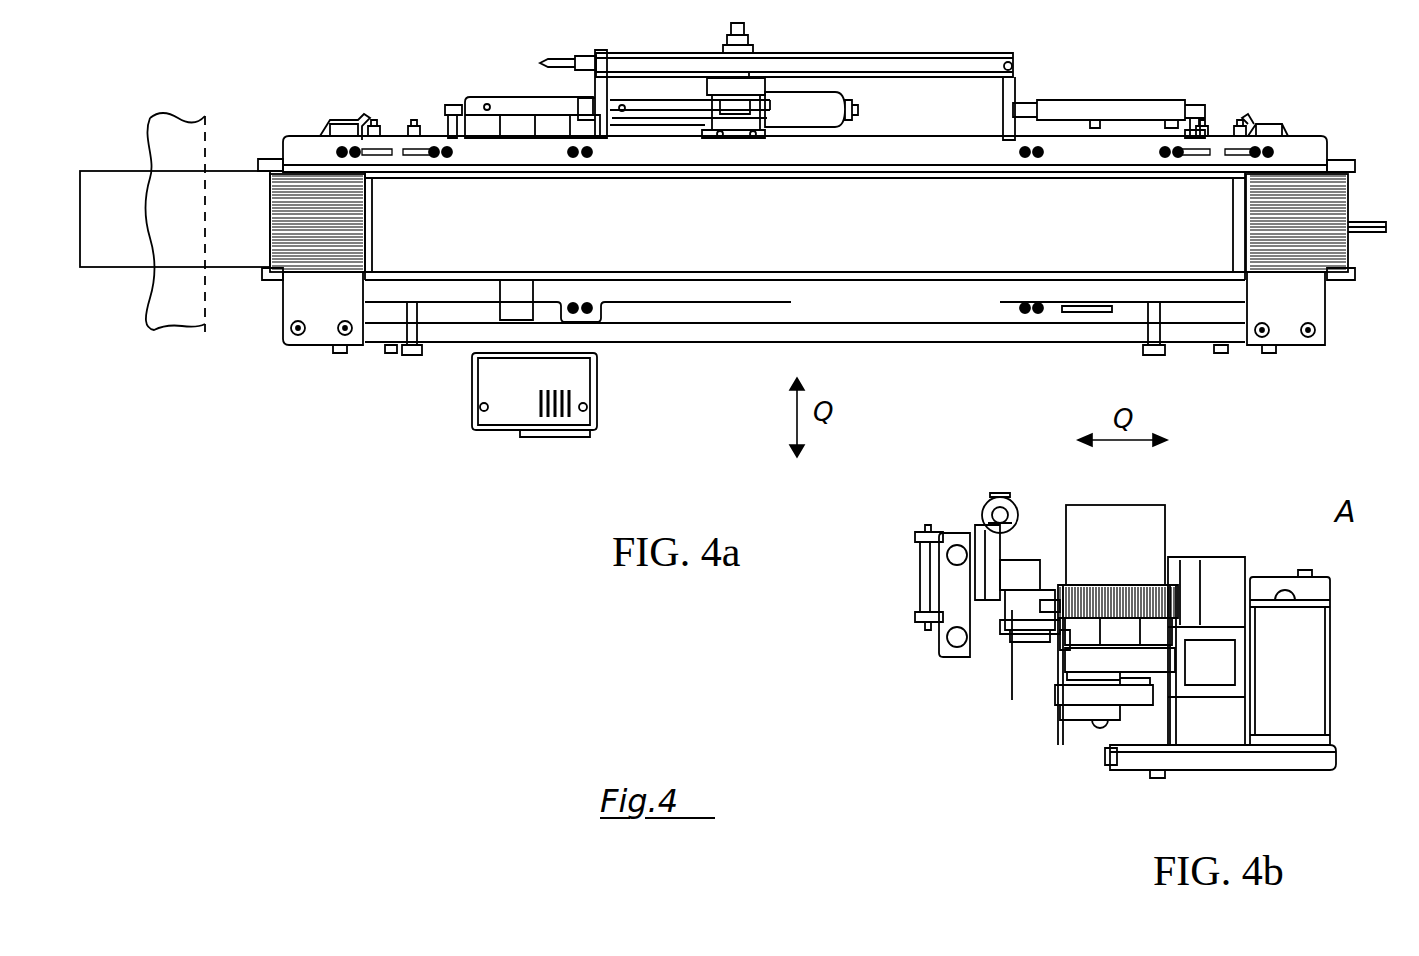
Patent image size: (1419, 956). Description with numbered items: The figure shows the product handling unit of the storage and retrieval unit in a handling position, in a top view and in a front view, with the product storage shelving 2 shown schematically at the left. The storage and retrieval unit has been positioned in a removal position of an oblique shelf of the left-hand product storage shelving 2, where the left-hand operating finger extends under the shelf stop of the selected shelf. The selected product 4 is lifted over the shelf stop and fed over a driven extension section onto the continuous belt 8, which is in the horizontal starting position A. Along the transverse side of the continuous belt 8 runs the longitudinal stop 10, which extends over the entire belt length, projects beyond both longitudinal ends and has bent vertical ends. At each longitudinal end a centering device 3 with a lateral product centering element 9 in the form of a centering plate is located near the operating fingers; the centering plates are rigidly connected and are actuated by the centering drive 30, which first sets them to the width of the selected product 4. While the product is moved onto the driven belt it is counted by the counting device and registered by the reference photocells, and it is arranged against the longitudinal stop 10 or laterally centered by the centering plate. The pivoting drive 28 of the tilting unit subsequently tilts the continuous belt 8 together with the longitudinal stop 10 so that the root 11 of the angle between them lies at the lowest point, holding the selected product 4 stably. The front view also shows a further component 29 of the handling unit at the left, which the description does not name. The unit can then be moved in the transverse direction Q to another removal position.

In FIG. 4A, the product storage shelving 2 is at (180, 128).
In FIG. 4A, the centering device 3 is at (255, 355).
In FIG. 4A, the selected product 4 is at (103, 187).
In FIG. 4B, the selected product 4 is at (1116, 561).
In FIG. 4A, the continuous belt 8 is at (801, 231).
In FIG. 4B, the lateral product centering element 9 is at (1187, 553).
In FIG. 4A, the longitudinal stop 10 is at (497, 173).
In FIG. 4B, the longitudinal stop 10 is at (1062, 557).
In FIG. 4B, the root of the angle 11 is at (1065, 622).
In FIG. 4A, the pivoting drive 28 is at (823, 102).
In FIG. 4B, the adjusting device 29 is at (1002, 590).
In FIG. 4A, the centering drive 30 is at (503, 420).